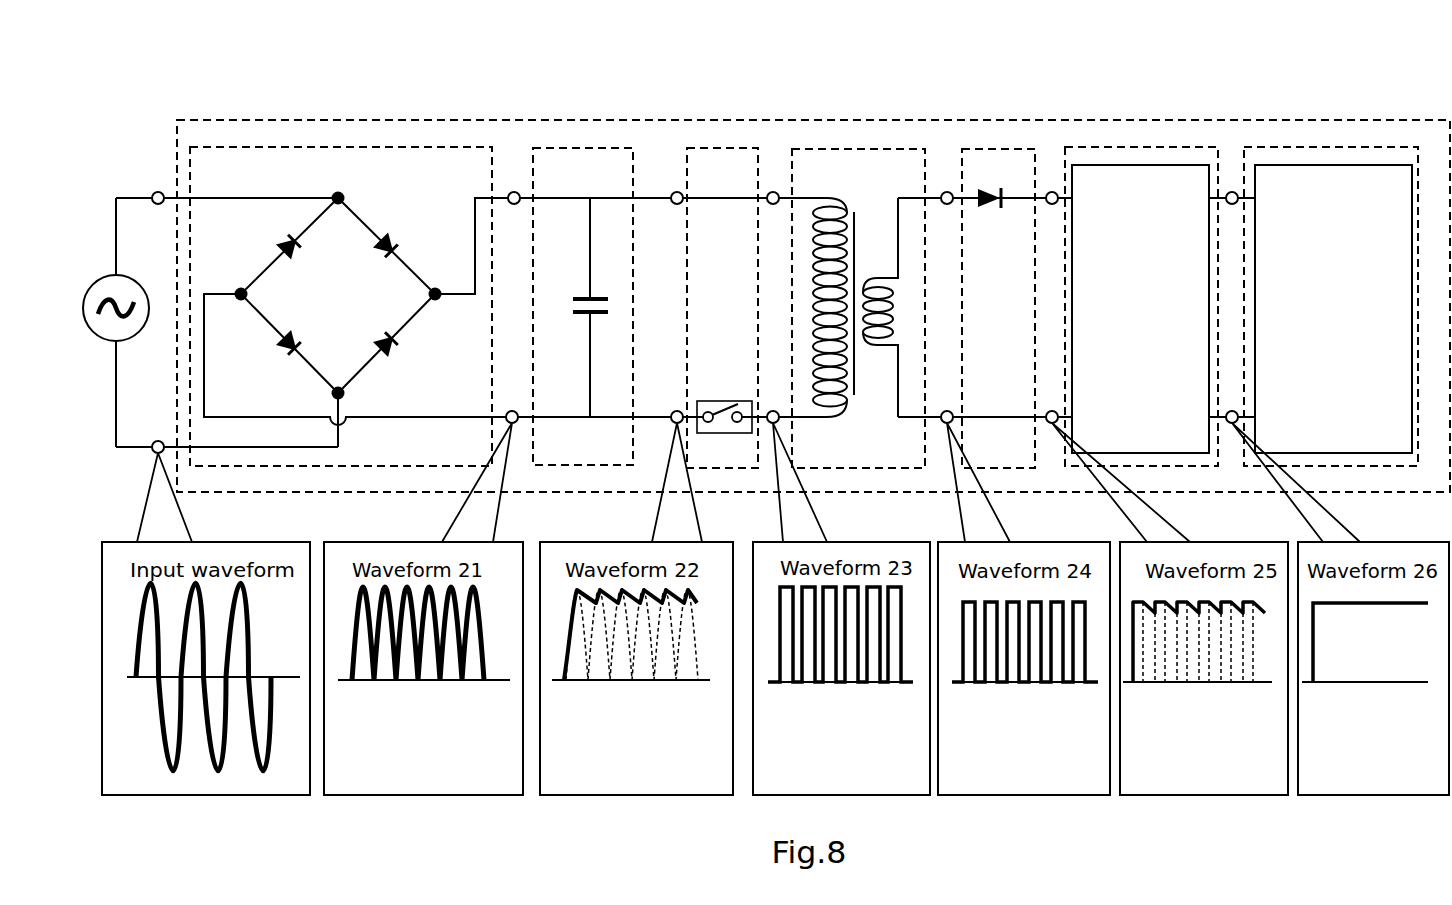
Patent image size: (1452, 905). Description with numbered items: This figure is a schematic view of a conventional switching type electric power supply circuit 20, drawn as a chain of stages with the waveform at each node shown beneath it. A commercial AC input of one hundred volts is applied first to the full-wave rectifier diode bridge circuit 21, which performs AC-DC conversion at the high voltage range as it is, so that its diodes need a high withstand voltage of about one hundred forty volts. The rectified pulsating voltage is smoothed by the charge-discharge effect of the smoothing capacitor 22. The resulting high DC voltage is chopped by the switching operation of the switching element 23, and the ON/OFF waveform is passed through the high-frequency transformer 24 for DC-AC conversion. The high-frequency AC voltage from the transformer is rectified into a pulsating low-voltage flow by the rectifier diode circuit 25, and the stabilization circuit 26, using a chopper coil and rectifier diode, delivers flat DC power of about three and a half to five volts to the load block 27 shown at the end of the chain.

The conventional switching type electric power supply circuit 20 is at (197, 120).
The full-wave rectifier diode bridge circuit 21 is at (348, 147).
The smoothing capacitor 22 is at (598, 147).
The switching element 23 is at (704, 147).
The high-frequency transformer 24 is at (827, 147).
The rectifier diode circuit 25 is at (978, 147).
The stabilization circuit 26 is at (1130, 147).
The LED lighting device 27 is at (1325, 147).